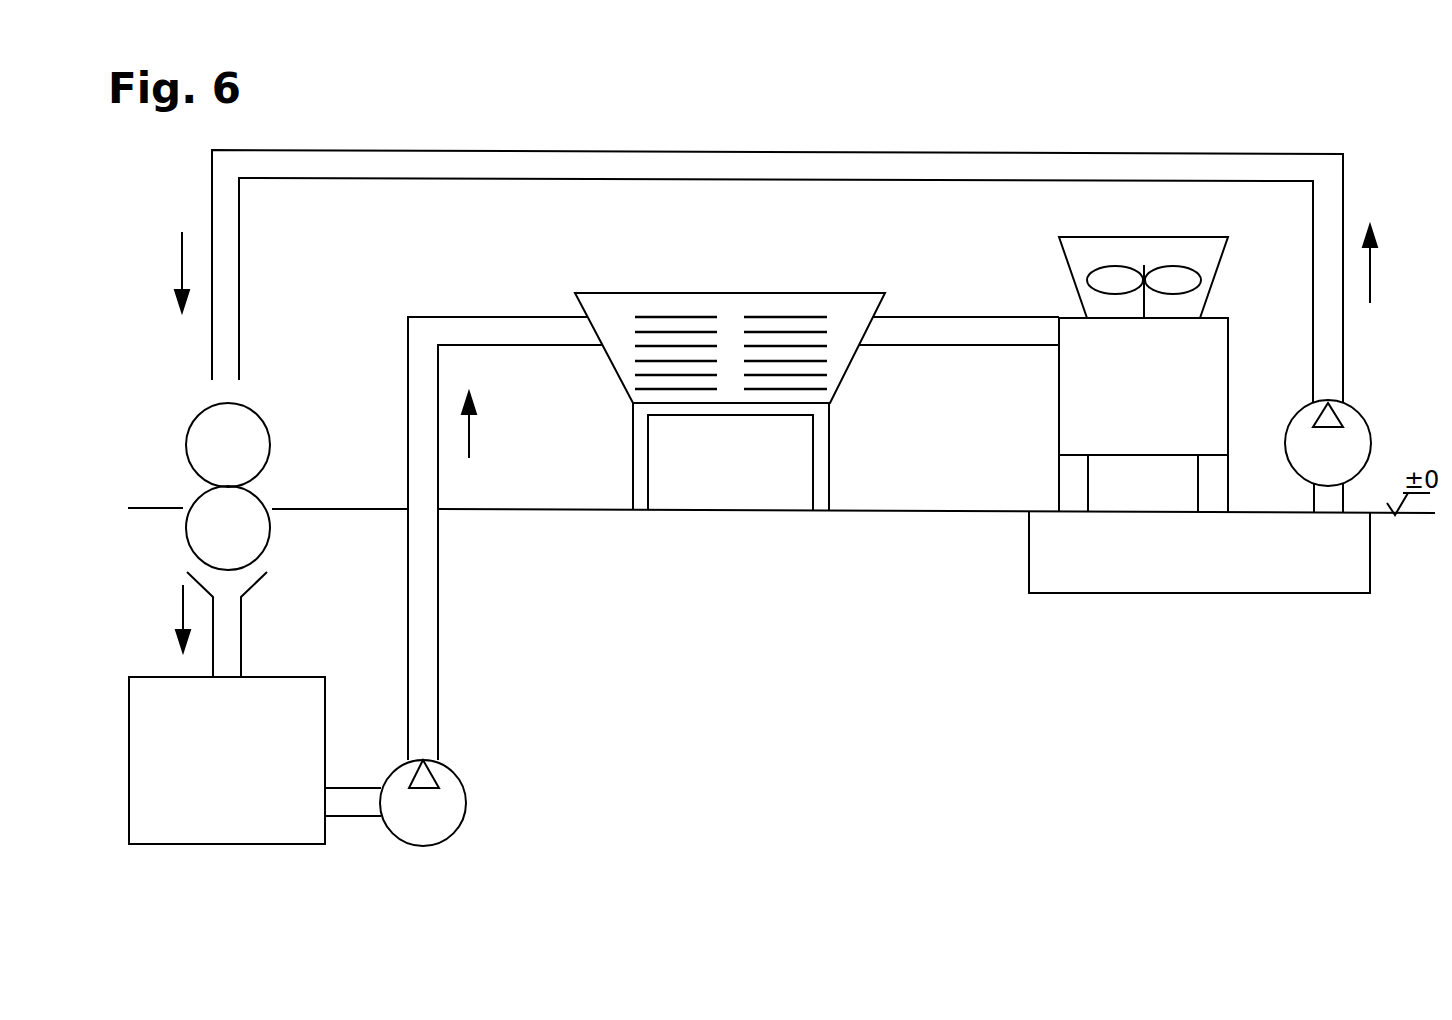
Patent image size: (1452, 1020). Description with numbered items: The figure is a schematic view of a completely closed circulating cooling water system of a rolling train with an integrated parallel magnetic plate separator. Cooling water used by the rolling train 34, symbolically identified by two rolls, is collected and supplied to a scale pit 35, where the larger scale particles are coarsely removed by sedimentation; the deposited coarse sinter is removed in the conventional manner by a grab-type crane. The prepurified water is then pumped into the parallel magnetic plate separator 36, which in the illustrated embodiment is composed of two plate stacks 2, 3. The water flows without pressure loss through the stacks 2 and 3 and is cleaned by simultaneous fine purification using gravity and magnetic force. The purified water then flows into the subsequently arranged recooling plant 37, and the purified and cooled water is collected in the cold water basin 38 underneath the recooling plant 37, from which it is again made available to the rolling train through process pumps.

The plate stack 2 is at (644, 381).
The plate stack 3 is at (820, 381).
The rolling train 34 is at (166, 452).
The scale pit 35 is at (207, 765).
The parallel magnetic plate separator 36 is at (730, 358).
The recooling plant 37 is at (1126, 436).
The cold water basin 38 is at (1240, 572).